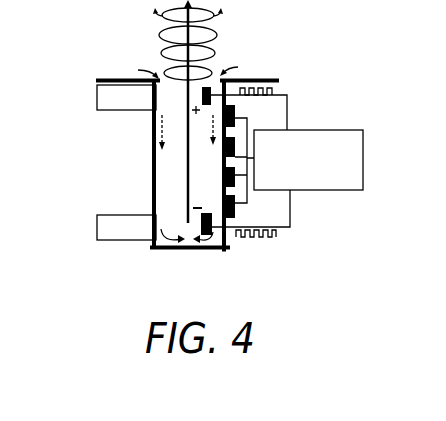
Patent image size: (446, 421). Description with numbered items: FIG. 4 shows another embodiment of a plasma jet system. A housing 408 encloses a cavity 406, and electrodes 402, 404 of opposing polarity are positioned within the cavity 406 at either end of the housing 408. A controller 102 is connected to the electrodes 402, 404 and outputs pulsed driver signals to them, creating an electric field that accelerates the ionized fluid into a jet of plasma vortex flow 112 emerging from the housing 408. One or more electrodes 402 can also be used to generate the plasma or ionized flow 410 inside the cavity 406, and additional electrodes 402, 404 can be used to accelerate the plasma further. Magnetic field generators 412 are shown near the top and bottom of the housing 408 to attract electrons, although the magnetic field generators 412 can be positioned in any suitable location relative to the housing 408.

The controller 102 is at (340, 130).
The plasma vortex flow 112 is at (210, 22).
The electrode 402 is at (207, 93).
The electrode 404 is at (225, 238).
The cavity 406 is at (170, 203).
The housing 408 is at (155, 173).
The plasma or ionized flow 410 is at (155, 140).
The magnetic field generator 412 is at (97, 96).